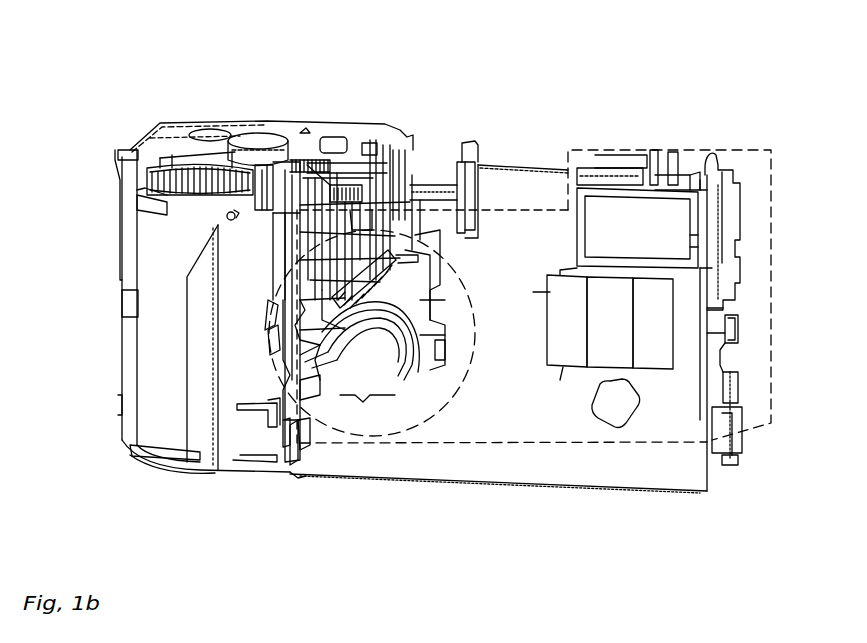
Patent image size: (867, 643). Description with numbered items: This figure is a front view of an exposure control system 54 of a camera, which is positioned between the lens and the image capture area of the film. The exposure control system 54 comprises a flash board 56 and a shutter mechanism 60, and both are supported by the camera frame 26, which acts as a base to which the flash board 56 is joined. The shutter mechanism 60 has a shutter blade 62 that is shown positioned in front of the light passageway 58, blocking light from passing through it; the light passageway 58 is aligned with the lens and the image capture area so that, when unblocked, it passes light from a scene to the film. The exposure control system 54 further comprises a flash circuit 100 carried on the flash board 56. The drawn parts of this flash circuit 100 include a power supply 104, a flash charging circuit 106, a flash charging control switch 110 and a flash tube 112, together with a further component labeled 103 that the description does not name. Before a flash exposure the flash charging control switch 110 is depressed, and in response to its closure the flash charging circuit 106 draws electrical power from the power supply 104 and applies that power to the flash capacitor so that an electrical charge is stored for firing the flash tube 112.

The frame 26 is at (193, 125).
The exposure control system 54 is at (528, 65).
The flash board 56 is at (683, 350).
The light passageway 58 is at (388, 365).
The shutter mechanism 60 is at (332, 433).
The shutter blade 62 is at (385, 365).
The flash circuit 100 is at (702, 152).
The electronic component 103 is at (593, 338).
The power supply 104 is at (668, 338).
The flash charging circuit 106 is at (632, 338).
The flash charging control switch 110 is at (628, 413).
The flash tube 112 is at (637, 228).